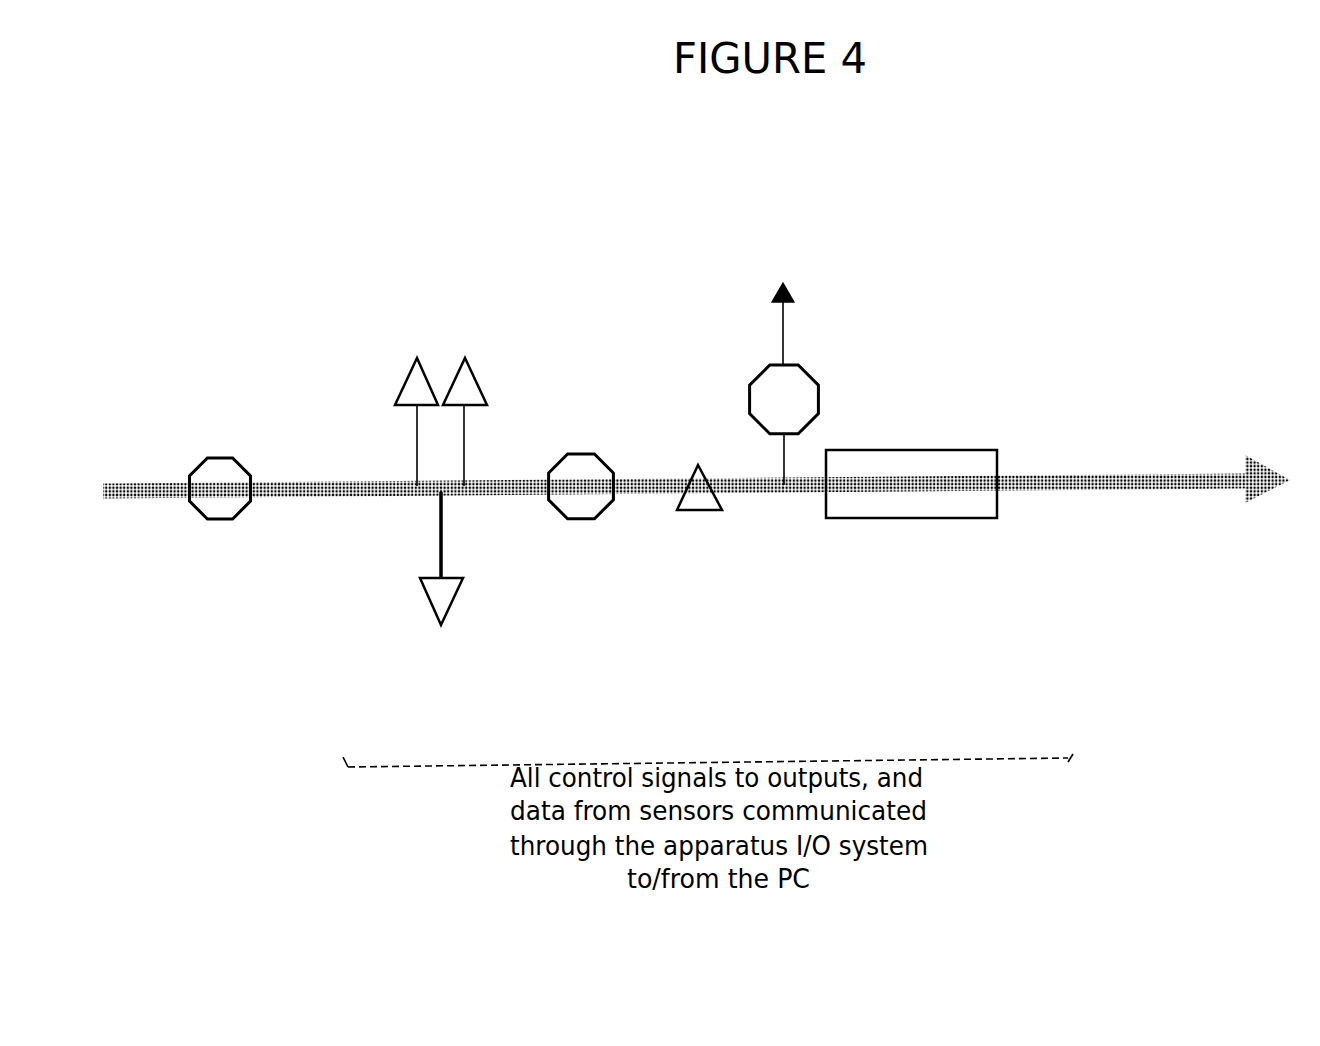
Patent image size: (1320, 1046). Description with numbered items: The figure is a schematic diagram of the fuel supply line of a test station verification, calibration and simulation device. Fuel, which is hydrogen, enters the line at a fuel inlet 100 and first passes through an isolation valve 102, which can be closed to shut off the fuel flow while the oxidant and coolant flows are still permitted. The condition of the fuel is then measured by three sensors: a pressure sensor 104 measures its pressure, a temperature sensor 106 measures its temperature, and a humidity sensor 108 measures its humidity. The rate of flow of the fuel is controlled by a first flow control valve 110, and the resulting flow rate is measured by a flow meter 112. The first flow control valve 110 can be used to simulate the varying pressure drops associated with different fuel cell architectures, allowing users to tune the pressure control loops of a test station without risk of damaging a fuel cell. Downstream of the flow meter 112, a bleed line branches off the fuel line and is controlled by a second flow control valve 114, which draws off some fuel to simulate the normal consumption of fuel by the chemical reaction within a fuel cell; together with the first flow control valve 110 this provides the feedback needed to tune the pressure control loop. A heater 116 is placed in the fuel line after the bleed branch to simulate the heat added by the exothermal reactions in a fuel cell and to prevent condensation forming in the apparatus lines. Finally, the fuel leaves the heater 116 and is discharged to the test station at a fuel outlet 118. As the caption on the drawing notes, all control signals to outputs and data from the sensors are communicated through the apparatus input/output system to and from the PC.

The fuel inlet 100 is at (141, 499).
The isolation valve 102 is at (216, 456).
The pressure sensor 104 is at (408, 378).
The temperature sensor 106 is at (477, 380).
The humidity sensor 108 is at (455, 578).
The first flow control valve 110 is at (583, 454).
The flow meter 112 is at (692, 469).
The second flow control valve 114 is at (762, 373).
The heater 116 is at (917, 450).
The fuel outlet 118 is at (1276, 470).